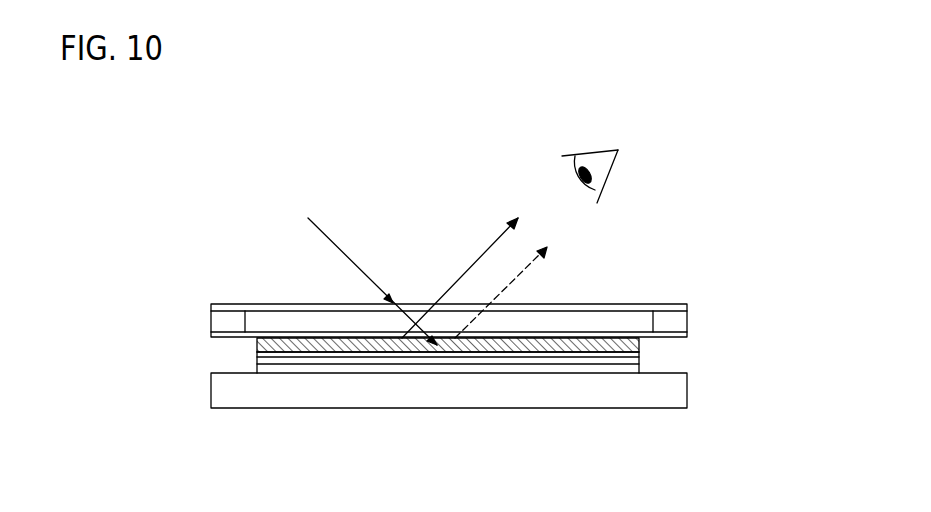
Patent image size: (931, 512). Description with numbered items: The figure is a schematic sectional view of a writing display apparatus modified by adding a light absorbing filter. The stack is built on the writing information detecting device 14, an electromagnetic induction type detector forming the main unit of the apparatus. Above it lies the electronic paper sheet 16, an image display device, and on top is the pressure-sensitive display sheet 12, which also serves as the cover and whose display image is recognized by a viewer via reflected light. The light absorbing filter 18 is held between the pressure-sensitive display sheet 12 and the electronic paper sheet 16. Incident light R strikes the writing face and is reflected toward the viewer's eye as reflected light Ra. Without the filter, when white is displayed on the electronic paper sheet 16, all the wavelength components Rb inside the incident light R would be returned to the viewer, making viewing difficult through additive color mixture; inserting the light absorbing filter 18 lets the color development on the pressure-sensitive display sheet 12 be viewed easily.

The pressure-sensitive display sheet 12 is at (698, 322).
The writing information detecting device 14 is at (680, 390).
The electronic paper sheet 16 is at (640, 365).
The light absorbing filter 18 is at (640, 347).
The incident light R is at (372, 272).
The reflected light ray Ra is at (473, 269).
The wavelength components inside incident light Rb is at (518, 285).